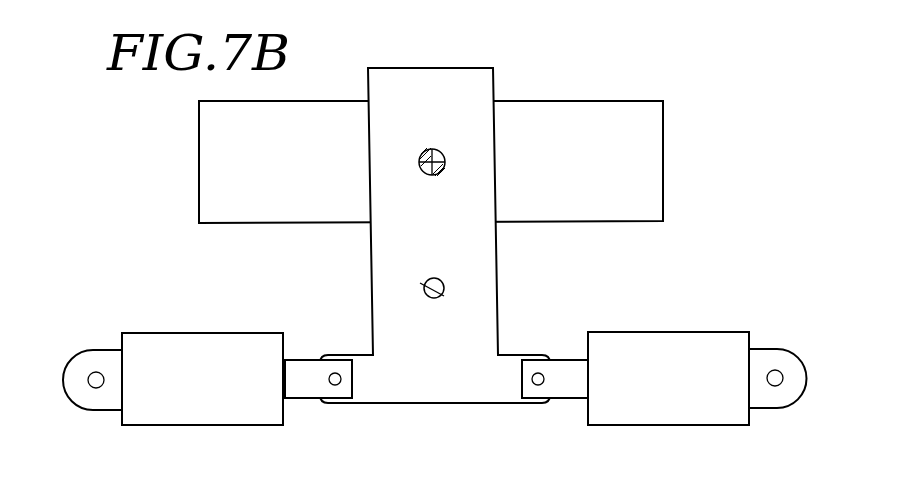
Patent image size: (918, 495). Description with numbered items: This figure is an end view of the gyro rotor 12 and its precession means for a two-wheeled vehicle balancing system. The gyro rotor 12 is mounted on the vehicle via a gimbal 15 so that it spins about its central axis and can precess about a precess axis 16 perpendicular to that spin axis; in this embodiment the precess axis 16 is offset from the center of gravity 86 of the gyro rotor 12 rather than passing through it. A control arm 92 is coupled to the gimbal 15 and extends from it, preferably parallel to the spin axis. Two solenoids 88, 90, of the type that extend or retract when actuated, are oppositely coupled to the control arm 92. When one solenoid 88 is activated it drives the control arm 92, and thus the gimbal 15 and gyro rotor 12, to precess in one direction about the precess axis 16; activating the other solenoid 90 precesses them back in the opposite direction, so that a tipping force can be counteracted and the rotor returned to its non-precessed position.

The gyro rotor 12 is at (225, 163).
The gimbal 15 is at (458, 87).
The precess axis 16 is at (424, 286).
The center of gravity 86 is at (445, 152).
The solenoid 88 is at (198, 350).
The solenoid 90 is at (628, 410).
The control arm 92 is at (390, 232).